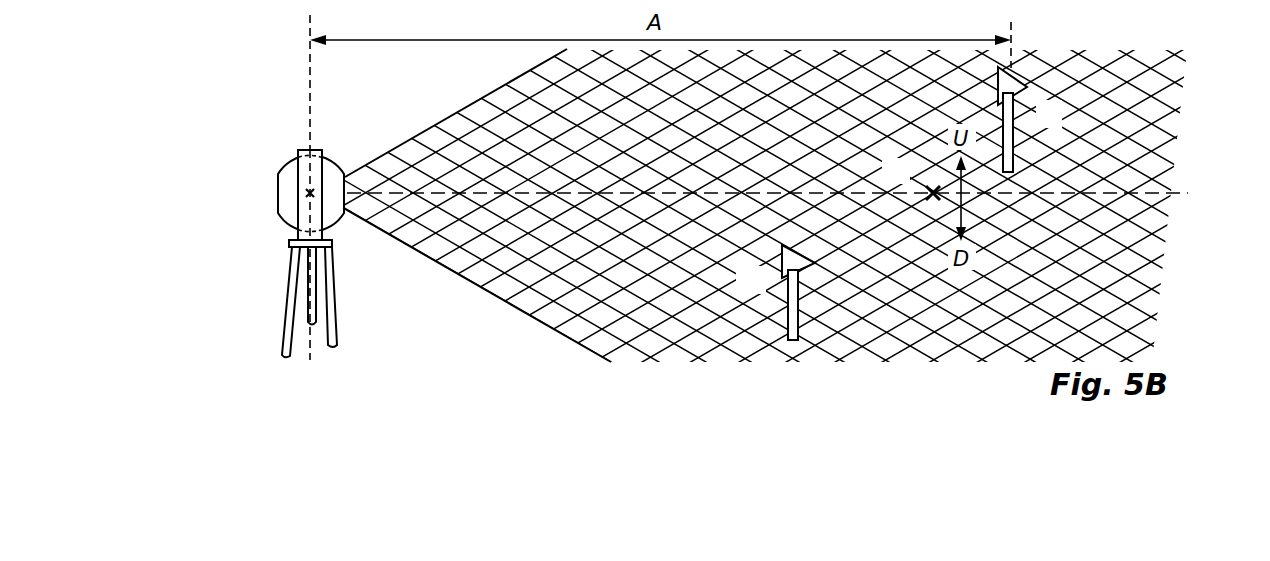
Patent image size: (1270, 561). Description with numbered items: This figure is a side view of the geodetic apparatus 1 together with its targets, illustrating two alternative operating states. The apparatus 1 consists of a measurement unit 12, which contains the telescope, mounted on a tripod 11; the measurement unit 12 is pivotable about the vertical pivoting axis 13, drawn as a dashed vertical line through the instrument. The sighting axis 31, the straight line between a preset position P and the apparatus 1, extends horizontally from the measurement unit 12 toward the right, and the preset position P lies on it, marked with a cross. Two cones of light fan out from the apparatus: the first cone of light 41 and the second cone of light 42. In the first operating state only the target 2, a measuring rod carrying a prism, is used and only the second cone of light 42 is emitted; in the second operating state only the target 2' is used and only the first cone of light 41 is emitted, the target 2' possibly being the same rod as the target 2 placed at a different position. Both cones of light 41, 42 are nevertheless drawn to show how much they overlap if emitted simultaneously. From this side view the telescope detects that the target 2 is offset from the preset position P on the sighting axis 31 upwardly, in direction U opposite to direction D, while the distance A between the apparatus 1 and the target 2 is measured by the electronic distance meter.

The geodetic apparatus 1 is at (281, 188).
The tripod 11 is at (290, 283).
The measurement unit 12 is at (278, 190).
The vertical pivoting axis 13 is at (307, 99).
The target 2 is at (1026, 119).
The target 2' is at (777, 292).
The sighting axis 31 is at (1193, 192).
The first cone of light 41 is at (437, 122).
The second cone of light 42 is at (398, 241).
The preset position P is at (930, 190).